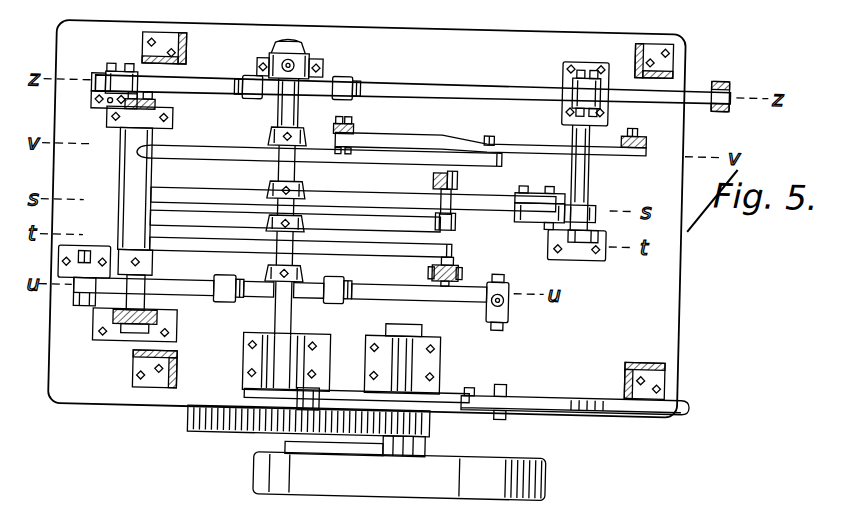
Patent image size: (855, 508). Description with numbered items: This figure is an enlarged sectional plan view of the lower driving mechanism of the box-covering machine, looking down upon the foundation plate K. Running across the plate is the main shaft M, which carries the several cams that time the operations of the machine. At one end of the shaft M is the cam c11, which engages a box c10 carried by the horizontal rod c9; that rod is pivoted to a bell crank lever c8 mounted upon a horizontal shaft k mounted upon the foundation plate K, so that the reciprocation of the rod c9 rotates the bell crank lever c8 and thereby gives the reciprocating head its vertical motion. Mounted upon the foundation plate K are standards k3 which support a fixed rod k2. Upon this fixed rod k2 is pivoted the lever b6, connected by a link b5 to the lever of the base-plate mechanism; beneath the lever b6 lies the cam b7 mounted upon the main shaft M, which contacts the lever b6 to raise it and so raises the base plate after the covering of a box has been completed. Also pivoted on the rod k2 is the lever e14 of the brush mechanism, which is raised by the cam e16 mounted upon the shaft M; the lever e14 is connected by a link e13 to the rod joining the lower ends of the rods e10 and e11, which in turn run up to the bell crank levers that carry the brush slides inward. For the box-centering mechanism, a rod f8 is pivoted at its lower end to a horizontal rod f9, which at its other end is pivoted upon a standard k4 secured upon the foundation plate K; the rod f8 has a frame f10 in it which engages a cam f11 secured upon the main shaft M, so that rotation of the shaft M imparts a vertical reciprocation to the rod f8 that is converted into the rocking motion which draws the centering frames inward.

The foundation plate K is at (677, 293).
The horizontal shaft k is at (594, 163).
The fixed rod k2 is at (139, 299).
The standards k3 is at (107, 313).
The standard k4 is at (69, 267).
The main shaft M is at (297, 312).
The bell crank lever c8 is at (642, 82).
The horizontal rod c9 is at (504, 79).
The box c10 is at (349, 67).
The cam c11 is at (320, 47).
The link b5 is at (542, 186).
The lever b6 is at (600, 201).
The cam b7 is at (312, 187).
The rod e10 is at (455, 289).
The rod e11 is at (439, 177).
The link e13 is at (464, 250).
The lever e14 is at (361, 229).
The cam e16 is at (315, 214).
The rod f8 is at (512, 290).
The horizontal rod f9 is at (477, 286).
The frame f10 is at (234, 274).
The cam f11 is at (311, 271).